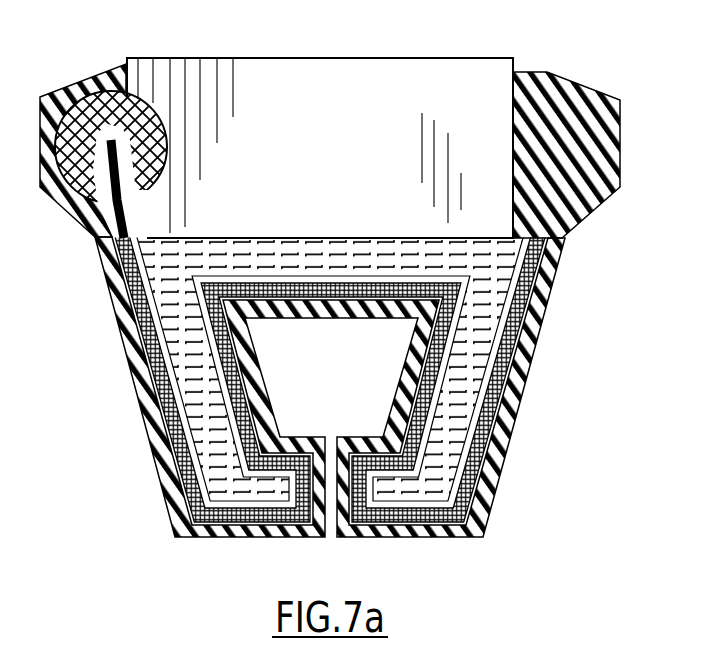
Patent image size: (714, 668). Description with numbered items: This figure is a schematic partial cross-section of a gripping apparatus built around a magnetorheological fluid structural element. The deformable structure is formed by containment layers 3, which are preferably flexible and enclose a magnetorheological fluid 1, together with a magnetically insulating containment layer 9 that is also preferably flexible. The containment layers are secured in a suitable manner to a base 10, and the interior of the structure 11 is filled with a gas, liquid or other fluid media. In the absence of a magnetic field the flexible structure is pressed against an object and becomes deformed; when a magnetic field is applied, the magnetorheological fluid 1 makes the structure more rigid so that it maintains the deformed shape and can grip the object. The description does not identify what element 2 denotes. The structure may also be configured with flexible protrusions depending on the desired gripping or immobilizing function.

The magnetorheological fluid 1 is at (187, 433).
The sealing ring 2 is at (80, 82).
The containment layers 3 is at (143, 327).
The magnetically insulating containment layer 9 is at (530, 82).
The base 10 is at (243, 98).
The interior of the structure 11 is at (203, 380).